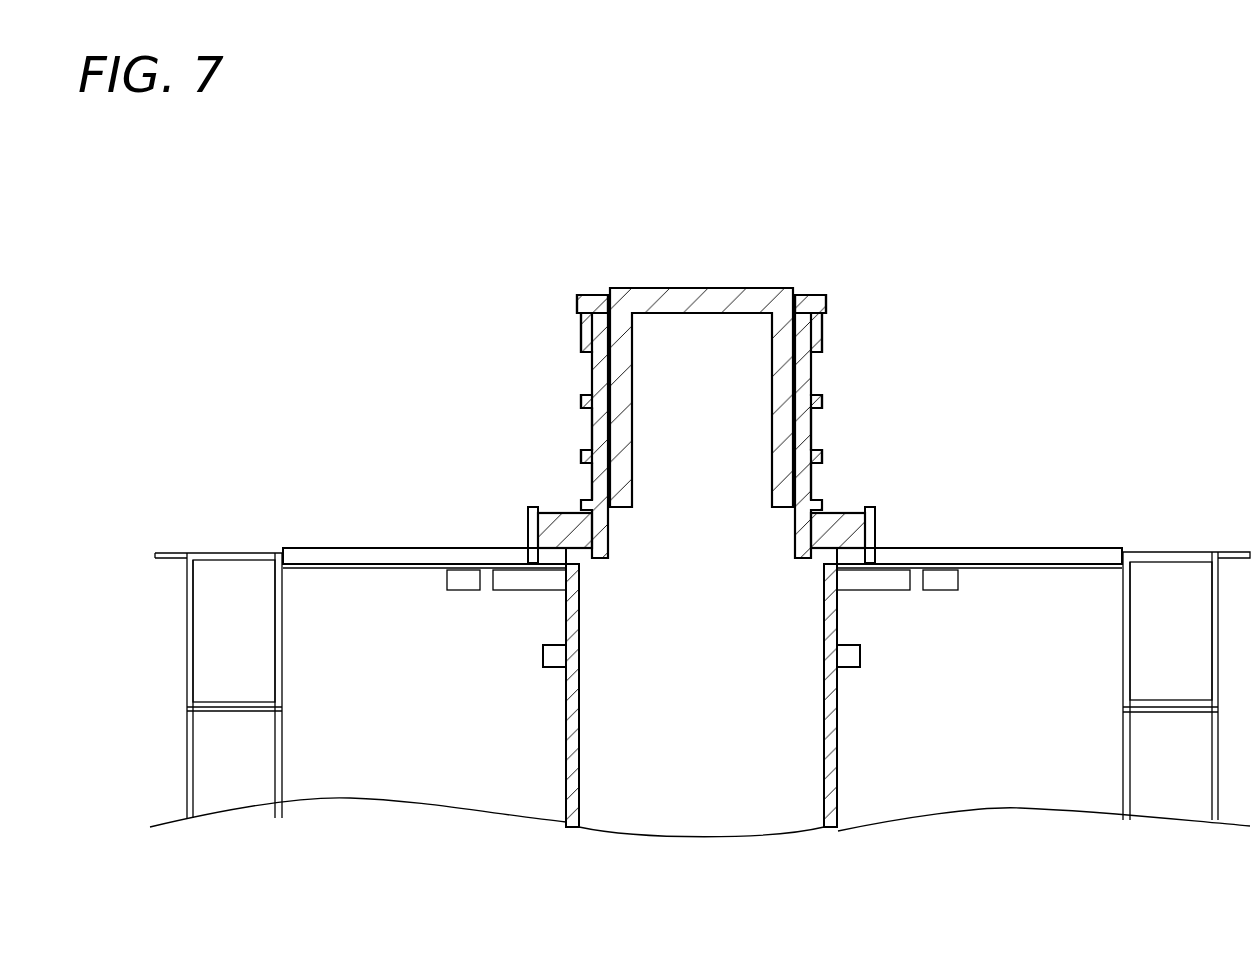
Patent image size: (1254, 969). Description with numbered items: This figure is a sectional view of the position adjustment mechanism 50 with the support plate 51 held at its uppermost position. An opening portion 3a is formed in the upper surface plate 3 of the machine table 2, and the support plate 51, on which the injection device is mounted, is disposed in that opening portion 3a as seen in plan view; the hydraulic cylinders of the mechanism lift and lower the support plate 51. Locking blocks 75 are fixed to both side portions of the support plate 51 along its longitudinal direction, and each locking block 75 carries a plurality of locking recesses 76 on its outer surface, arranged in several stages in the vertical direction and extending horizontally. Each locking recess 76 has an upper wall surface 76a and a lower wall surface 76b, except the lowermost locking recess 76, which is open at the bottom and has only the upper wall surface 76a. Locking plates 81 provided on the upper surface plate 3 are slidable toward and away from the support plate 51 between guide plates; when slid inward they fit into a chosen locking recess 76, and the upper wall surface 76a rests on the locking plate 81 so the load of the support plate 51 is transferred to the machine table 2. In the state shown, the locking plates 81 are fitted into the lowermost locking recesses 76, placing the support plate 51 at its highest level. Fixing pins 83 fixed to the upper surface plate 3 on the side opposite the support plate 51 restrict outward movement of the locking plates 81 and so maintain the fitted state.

The machine table 2 is at (1178, 552).
The upper surface plate 3 is at (1073, 548).
The opening portion 3a is at (712, 555).
The position adjustment mechanism 50 is at (693, 415).
The support plate 51 is at (776, 288).
The locking block 75 is at (587, 326).
The locking recess 76 is at (583, 370).
The upper wall surface 76a is at (580, 408).
The lower wall surface 76b is at (583, 447).
The locking plate 81 is at (562, 540).
The fixing pin 83 is at (528, 528).